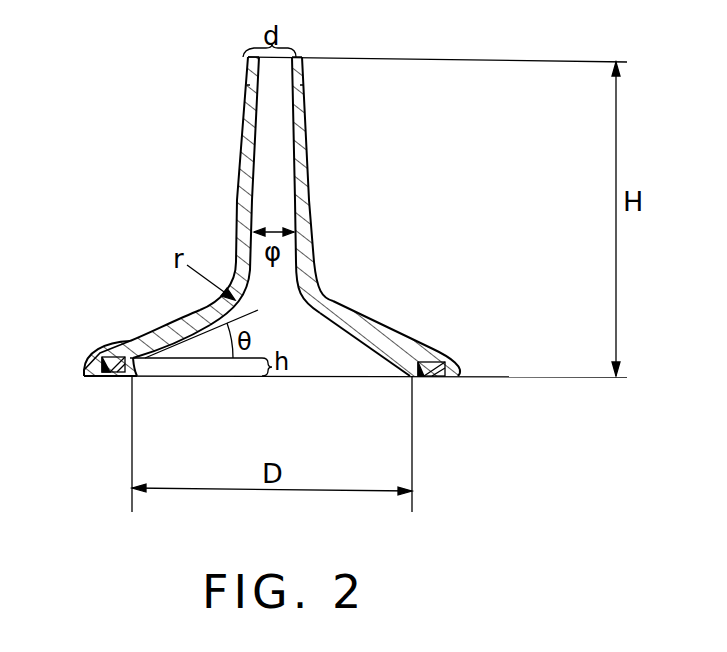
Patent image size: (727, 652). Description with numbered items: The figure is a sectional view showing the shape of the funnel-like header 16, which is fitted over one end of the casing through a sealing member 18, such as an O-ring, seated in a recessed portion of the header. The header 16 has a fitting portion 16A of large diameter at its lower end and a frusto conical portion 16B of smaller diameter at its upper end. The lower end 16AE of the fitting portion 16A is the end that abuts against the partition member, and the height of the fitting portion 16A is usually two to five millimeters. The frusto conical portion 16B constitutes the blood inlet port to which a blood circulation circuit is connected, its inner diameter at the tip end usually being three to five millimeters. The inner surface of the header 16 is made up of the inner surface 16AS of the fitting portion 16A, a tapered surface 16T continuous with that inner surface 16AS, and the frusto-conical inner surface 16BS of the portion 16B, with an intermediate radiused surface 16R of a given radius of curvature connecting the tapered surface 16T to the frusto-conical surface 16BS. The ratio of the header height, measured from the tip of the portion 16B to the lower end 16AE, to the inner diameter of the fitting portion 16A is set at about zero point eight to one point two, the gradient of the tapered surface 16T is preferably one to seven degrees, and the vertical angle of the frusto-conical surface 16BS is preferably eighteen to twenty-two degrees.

The header 16 is at (233, 185).
The frusto conical portion 16B is at (247, 114).
The frusto-conical inner surface 16BS is at (299, 150).
The intermediate radiused surface 16R is at (333, 305).
The fitting portion 16A is at (423, 348).
The lower end 16AE is at (413, 378).
The inner surface 16AS is at (140, 368).
The tapered surface 16T is at (196, 338).
The sealing member 18 is at (107, 350).